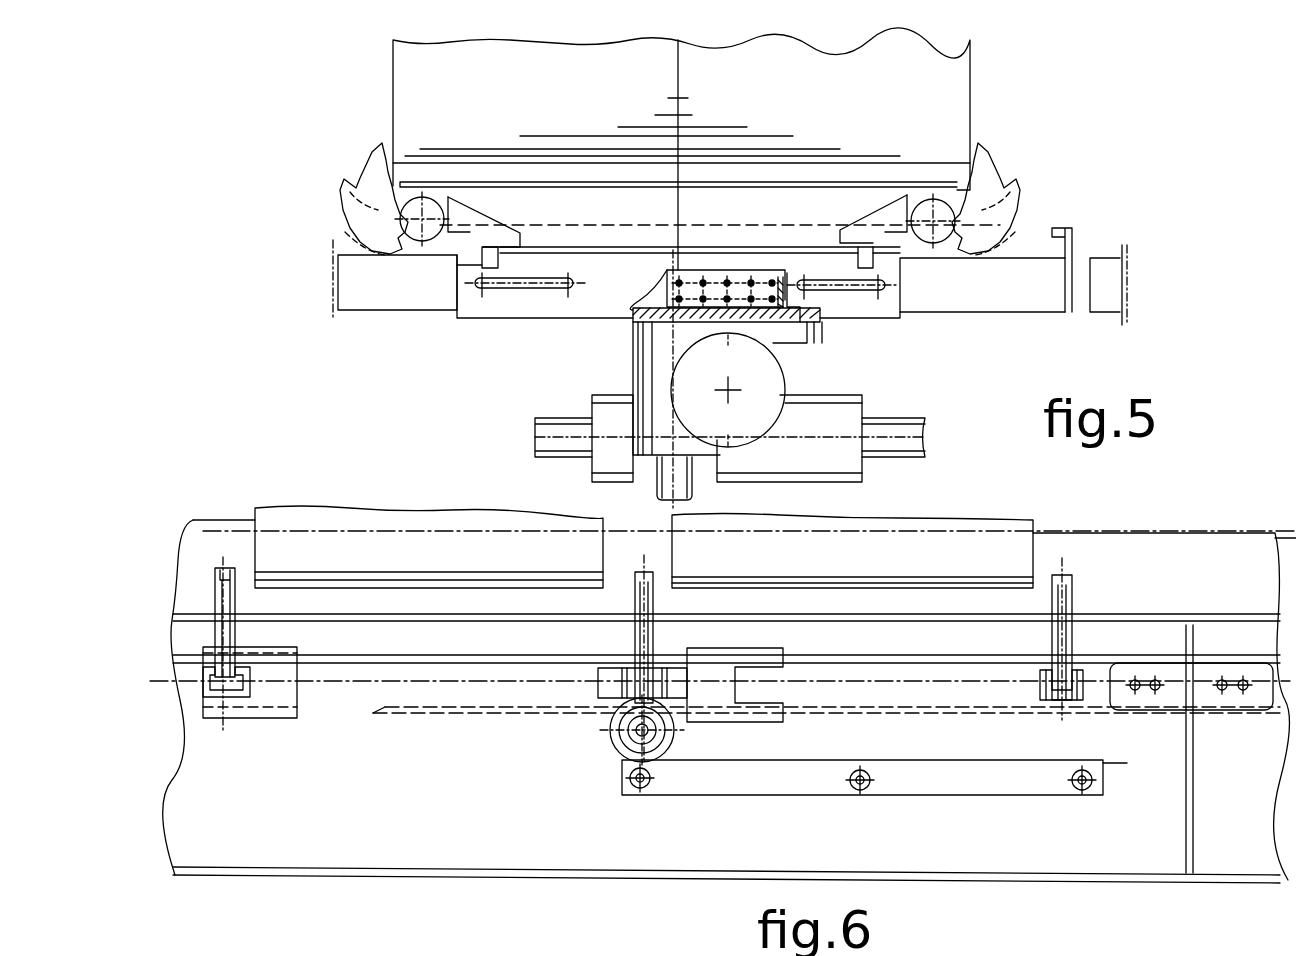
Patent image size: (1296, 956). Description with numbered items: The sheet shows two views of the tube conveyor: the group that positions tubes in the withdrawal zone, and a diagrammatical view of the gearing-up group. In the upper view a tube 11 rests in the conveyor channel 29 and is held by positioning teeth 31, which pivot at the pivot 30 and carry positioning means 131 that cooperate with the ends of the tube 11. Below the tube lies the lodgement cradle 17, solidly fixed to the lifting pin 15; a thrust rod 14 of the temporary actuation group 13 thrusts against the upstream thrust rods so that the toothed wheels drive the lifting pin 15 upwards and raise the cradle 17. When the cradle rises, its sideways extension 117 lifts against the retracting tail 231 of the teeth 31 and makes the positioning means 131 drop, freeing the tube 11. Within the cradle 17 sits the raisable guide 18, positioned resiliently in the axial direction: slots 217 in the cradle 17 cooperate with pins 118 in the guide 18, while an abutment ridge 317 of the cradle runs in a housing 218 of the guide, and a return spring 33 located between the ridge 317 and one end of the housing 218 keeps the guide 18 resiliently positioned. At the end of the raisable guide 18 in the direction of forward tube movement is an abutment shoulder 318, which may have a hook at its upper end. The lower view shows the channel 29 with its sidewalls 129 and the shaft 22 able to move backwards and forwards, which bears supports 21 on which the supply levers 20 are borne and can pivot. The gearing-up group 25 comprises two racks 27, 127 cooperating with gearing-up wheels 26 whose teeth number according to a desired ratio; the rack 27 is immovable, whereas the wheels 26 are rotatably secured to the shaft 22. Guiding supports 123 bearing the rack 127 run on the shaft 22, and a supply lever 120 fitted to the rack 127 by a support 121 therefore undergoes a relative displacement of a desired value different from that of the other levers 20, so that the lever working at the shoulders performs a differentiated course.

In FIG. 5, the tube 11 is at (952, 85).
In FIG. 6, the tube 11 is at (1020, 563).
In FIG. 5, the positioning means 131 is at (1000, 142).
In FIG. 5, the positioning teeth 31 is at (987, 177).
In FIG. 5, the pivot 30 is at (1010, 222).
In FIG. 5, the abutment shoulder 318 is at (1070, 242).
In FIG. 5, the retracting tail 231 is at (857, 227).
In FIG. 5, the raisable guide 18 is at (357, 278).
In FIG. 5, the pins 118 is at (470, 283).
In FIG. 5, the lodgement cradle 17 is at (468, 307).
In FIG. 5, the sideways extension 117 is at (548, 250).
In FIG. 5, the slots 217 is at (550, 256).
In FIG. 5, the abutment ridge 317 is at (762, 272).
In FIG. 5, the return spring 33 is at (678, 307).
In FIG. 5, the temporary actuation group 13 is at (768, 378).
In FIG. 5, the thrust rod 14 is at (900, 435).
In FIG. 5, the lifting pin 15 is at (667, 478).
In FIG. 5, the housing 218 is at (930, 312).
In FIG. 6, the supply lever on rack 120 is at (643, 593).
In FIG. 6, the supply lever 20 is at (220, 580).
In FIG. 6, the guiding supports 123 is at (243, 653).
In FIG. 6, the support 21 is at (207, 672).
In FIG. 6, the rack 127 is at (393, 718).
In FIG. 6, the support on rack 121 is at (617, 672).
In FIG. 6, the sidewalls 129 is at (1118, 562).
In FIG. 6, the shaft able to move backwards and forwards 22 is at (1085, 680).
In FIG. 6, the conveyor channel 29 is at (1226, 583).
In FIG. 6, the gearing-up group 25 is at (570, 742).
In FIG. 6, the gearing-up wheels 26 is at (612, 745).
In FIG. 6, the rack 27 is at (697, 778).